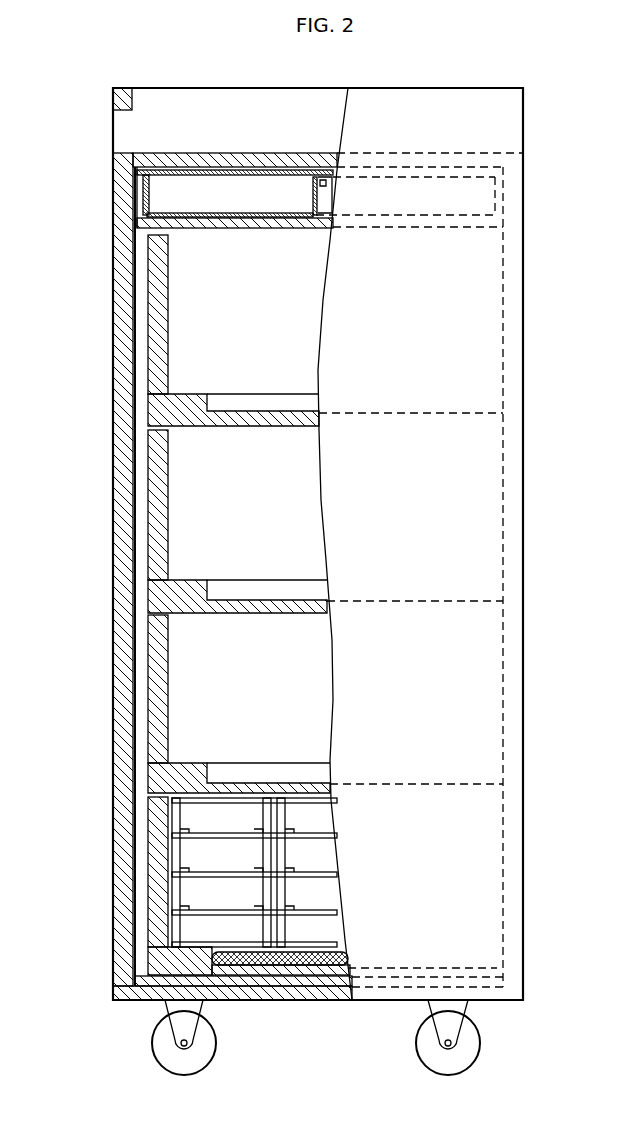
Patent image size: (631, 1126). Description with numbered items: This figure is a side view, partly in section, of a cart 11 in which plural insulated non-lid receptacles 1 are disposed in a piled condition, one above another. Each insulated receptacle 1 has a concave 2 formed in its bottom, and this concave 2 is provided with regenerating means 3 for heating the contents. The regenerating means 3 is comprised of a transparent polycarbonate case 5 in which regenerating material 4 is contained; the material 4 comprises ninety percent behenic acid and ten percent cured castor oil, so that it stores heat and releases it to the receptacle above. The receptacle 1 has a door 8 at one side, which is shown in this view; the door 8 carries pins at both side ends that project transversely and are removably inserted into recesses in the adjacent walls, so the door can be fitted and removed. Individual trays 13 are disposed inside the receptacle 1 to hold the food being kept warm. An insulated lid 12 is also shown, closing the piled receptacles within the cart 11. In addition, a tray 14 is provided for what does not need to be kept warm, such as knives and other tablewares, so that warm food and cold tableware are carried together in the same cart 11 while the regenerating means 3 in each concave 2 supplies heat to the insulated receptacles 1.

The insulated non-lid receptacle 1 is at (150, 489).
The concave 2 is at (222, 590).
The regenerating means 3 is at (192, 980).
The regenerating material 4 is at (215, 961).
The transparent polycarbonate case 5 is at (147, 988).
The door 8 is at (193, 872).
The cart 11 is at (122, 384).
The insulated lid 12 is at (200, 230).
The individual trays 13 is at (175, 810).
The tray 14 is at (147, 197).